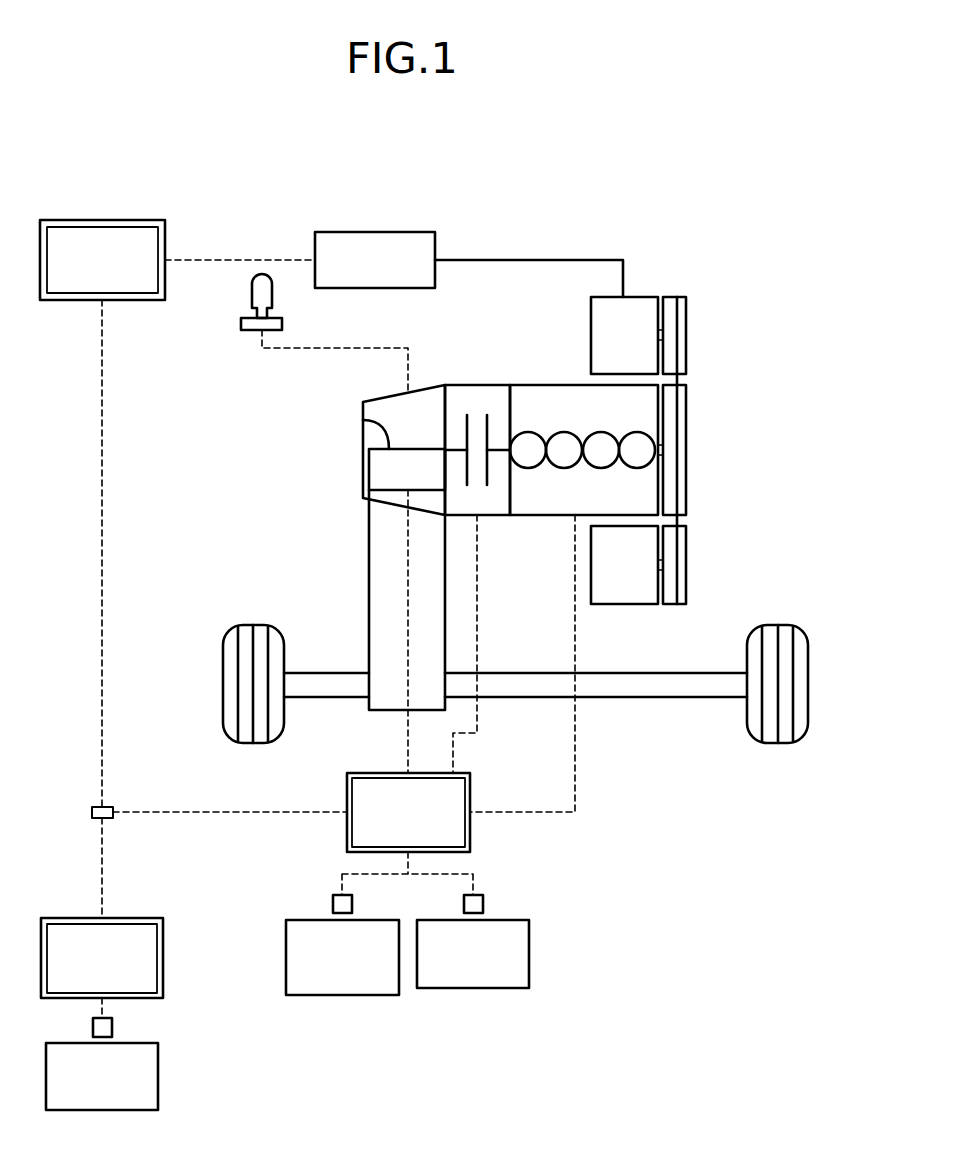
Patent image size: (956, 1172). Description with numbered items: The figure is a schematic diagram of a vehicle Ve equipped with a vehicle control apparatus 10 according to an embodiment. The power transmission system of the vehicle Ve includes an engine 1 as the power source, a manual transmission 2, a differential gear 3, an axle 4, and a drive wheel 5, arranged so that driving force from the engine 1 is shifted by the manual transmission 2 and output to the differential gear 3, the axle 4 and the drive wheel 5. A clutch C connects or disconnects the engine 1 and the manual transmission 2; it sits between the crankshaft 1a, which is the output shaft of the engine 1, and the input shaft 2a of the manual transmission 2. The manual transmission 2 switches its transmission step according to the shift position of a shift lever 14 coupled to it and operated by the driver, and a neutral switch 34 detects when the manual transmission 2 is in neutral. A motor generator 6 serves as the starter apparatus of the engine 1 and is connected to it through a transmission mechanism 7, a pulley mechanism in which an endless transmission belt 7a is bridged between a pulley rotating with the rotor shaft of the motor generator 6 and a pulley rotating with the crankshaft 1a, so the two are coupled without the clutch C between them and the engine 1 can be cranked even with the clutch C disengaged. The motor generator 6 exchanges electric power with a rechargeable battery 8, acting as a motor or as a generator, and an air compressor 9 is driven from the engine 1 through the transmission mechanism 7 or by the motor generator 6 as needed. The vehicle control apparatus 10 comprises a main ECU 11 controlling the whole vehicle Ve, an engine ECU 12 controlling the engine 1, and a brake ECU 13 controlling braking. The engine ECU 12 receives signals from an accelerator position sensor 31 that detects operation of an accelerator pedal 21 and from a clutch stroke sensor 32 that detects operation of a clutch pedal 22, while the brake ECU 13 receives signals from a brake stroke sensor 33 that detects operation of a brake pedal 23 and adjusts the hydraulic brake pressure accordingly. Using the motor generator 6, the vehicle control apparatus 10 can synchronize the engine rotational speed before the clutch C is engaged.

The vehicle Ve is at (540, 158).
The vehicle control apparatus 10 is at (269, 187).
The engine 1 is at (535, 385).
The crankshaft 1a is at (497, 448).
The manual transmission 2 is at (378, 400).
The input shaft 2a is at (462, 448).
The clutch C is at (476, 405).
The differential gear 3 is at (396, 712).
The neutral switch 34 is at (363, 422).
The axle 4 is at (317, 697).
The drive wheel 5 is at (223, 683).
The motor generator 6 is at (640, 297).
The transmission mechanism 7 is at (700, 359).
The transmission belt 7a is at (678, 378).
The battery 8 is at (375, 232).
The air compressor 9 is at (623, 605).
The main ECU 11 is at (105, 220).
The engine ECU 12 is at (347, 795).
The brake ECU 13 is at (118, 918).
The shift lever 14 is at (252, 296).
The accelerator pedal 21 is at (344, 995).
The clutch pedal 22 is at (474, 988).
The brake pedal 23 is at (158, 1073).
The accelerator position sensor 31 is at (333, 904).
The clutch stroke sensor 32 is at (464, 904).
The brake stroke sensor 33 is at (93, 1028).